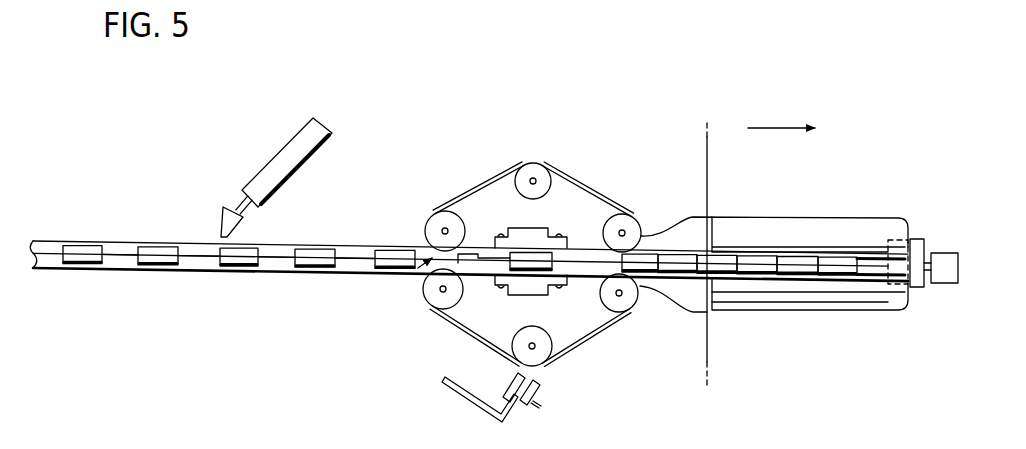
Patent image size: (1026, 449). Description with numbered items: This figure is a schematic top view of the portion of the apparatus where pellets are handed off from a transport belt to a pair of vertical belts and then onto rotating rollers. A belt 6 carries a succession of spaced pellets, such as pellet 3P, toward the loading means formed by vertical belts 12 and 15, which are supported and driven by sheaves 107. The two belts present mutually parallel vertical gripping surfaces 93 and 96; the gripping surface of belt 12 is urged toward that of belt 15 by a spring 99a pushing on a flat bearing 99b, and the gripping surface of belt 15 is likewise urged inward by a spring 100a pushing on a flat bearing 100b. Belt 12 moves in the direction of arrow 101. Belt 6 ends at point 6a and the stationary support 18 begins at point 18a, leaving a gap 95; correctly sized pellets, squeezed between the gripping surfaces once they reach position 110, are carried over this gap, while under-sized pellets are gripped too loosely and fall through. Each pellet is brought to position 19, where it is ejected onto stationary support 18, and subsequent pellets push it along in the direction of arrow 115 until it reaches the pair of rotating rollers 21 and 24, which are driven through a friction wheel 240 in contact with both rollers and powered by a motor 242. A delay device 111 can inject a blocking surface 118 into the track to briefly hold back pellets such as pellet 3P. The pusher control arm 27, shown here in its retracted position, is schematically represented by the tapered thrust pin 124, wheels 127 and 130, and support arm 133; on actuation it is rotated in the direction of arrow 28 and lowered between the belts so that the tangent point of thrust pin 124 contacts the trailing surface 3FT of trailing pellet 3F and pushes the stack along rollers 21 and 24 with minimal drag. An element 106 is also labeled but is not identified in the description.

The belt 6 is at (344, 277).
The pellet 3P is at (156, 266).
The trailing pellet 3F is at (251, 267).
The trailing surface 3FT is at (236, 258).
The delay device 111 is at (307, 147).
The blocking surface 118 is at (220, 223).
The sheaves 107 is at (442, 212).
The vertical belt 12 is at (583, 188).
The gap 95 is at (466, 198).
The gripping surface 93 is at (440, 245).
The arrow 101 is at (478, 252).
The gripping surface 96 is at (441, 311).
The spring 99a is at (537, 228).
The flat bearing 99b is at (565, 214).
The spring 100a is at (520, 294).
The flat bearing 100b is at (533, 296).
The position 110 is at (416, 270).
The end point of belt 6a is at (468, 268).
The start point of stationary support 18a is at (478, 280).
The guide rail 106 is at (470, 290).
The pusher control arm 27 is at (488, 407).
The support arm 133 is at (476, 397).
The wheel 127 is at (509, 381).
The tapered thrust pin 124 is at (536, 407).
The wheel 130 is at (527, 409).
The arrow 28 is at (581, 368).
The stationary support 18 is at (604, 328).
The vertical belt 15 is at (622, 305).
The position 19 is at (673, 325).
The rotating roller 21 is at (828, 227).
The rotating roller 24 is at (850, 290).
The friction wheel 240 is at (920, 245).
The motor 242 is at (945, 285).
The arrow 115 is at (770, 128).